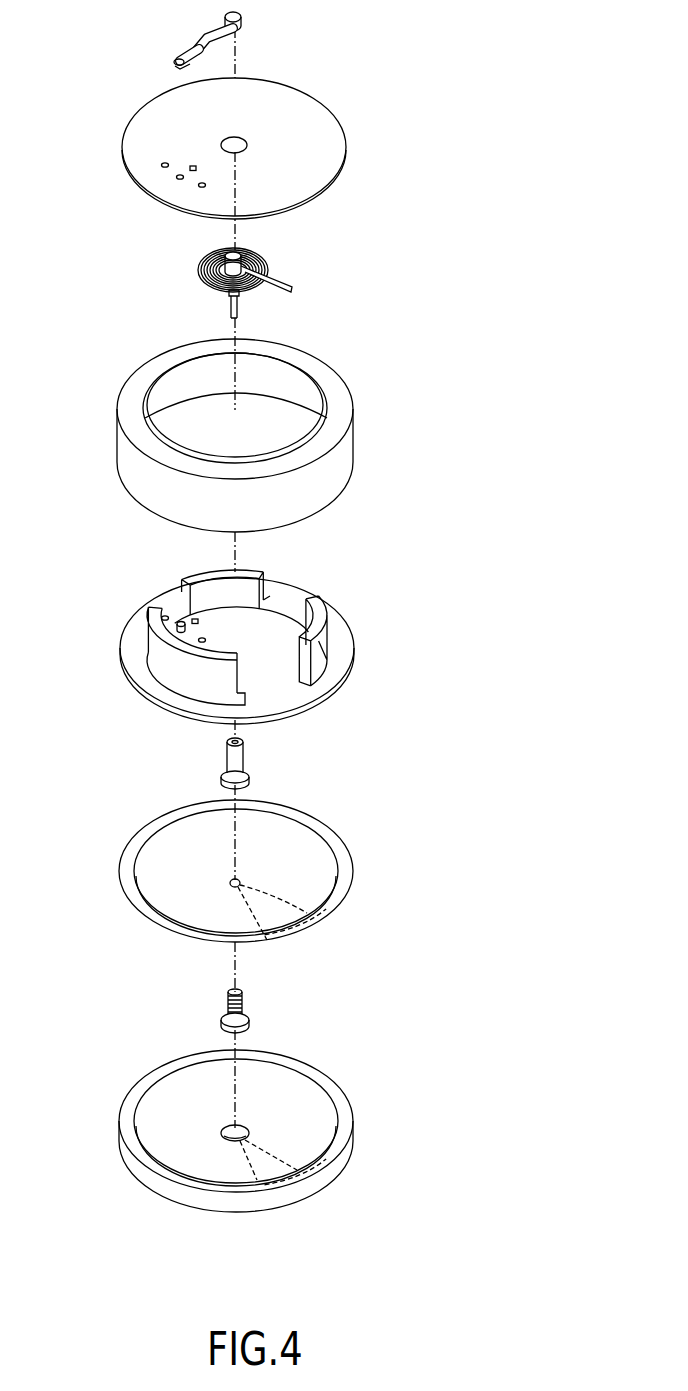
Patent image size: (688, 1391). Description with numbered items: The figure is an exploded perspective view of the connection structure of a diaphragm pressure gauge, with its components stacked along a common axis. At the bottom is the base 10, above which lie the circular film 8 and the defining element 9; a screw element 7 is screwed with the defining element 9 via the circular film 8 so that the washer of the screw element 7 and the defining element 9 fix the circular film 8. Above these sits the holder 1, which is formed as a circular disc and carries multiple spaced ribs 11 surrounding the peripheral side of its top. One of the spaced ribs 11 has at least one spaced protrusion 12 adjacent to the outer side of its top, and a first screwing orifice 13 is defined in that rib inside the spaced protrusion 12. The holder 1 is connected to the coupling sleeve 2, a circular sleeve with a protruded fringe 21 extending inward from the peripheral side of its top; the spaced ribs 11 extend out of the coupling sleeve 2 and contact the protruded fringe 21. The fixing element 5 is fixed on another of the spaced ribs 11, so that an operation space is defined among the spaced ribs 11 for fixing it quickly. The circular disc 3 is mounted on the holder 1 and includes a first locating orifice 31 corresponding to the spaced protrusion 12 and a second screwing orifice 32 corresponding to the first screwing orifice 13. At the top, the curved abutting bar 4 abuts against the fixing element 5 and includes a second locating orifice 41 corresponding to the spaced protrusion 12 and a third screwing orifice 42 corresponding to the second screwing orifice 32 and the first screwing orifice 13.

The holder 1 is at (263, 621).
The coupling sleeve 2 is at (294, 422).
The disc 3 is at (265, 169).
The curved abutting bar 4 is at (217, 35).
The fixing element 5 is at (270, 266).
The screw element 7 is at (247, 1015).
The circular film 8 is at (350, 852).
The defining element 9 is at (245, 758).
The base 10 is at (352, 1108).
The spaced ribs 11 is at (313, 608).
The spaced protrusion 12 is at (162, 617).
The first screwing orifice 13 is at (193, 619).
The protruded fringe 21 is at (307, 377).
The first locating orifice 31 is at (200, 188).
The second screwing orifice 32 is at (189, 166).
The second locating orifice 41 is at (176, 55).
The third screwing orifice 42 is at (190, 46).